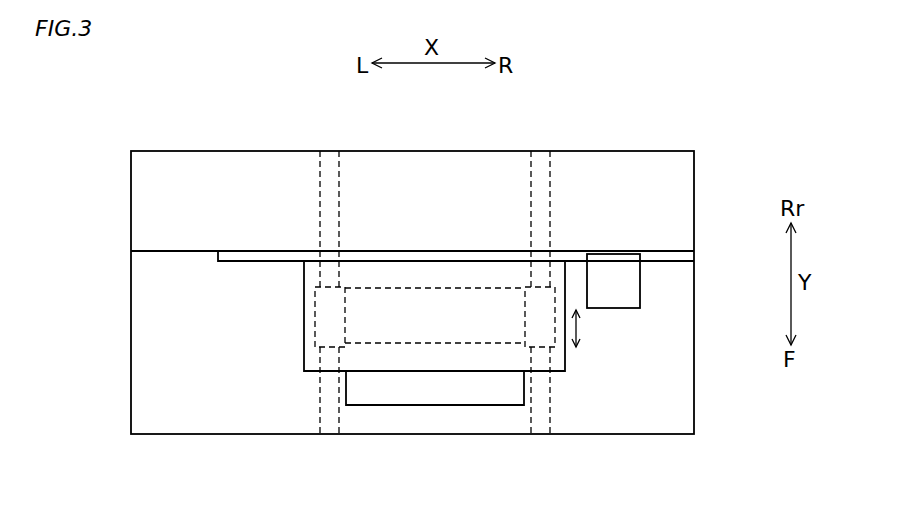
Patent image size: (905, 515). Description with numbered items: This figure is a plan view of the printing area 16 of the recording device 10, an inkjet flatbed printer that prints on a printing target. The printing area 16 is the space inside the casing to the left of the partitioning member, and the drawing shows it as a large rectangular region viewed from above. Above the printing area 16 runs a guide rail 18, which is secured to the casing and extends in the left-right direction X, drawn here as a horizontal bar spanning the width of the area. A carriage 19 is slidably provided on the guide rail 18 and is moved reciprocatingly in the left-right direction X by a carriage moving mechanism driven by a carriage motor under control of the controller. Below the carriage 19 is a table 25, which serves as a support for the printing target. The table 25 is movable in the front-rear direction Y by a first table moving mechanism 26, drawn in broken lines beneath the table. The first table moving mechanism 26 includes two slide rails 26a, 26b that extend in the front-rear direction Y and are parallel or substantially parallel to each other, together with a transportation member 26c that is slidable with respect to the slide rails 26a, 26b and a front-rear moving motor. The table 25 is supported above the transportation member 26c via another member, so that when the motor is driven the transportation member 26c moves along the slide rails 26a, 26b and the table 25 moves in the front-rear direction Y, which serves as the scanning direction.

The recording device 10 is at (617, 130).
The printing area 16 is at (208, 434).
The guide rail 18 is at (218, 262).
The carriage 19 is at (640, 282).
The table 25 is at (304, 325).
The first table moving mechanism 26 is at (292, 402).
The slide rail 26a is at (320, 414).
The slide rail 26b is at (550, 415).
The transportation member 26c is at (421, 285).